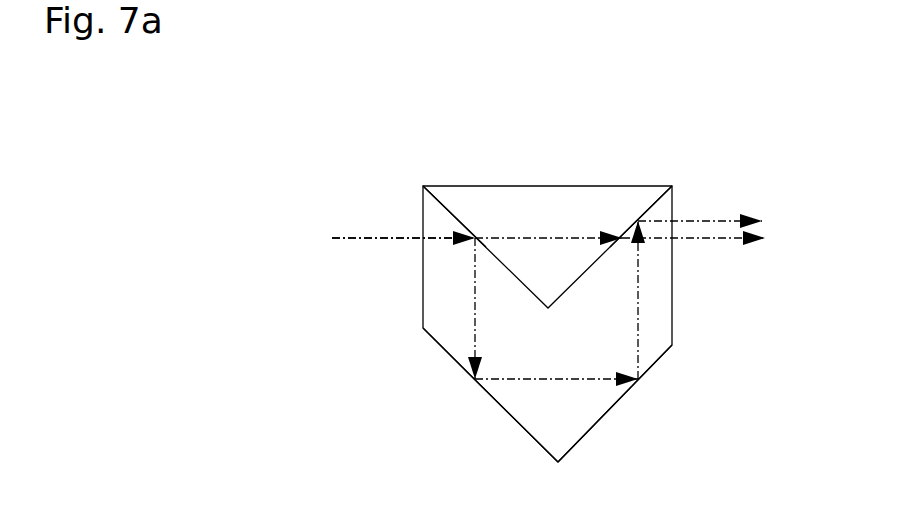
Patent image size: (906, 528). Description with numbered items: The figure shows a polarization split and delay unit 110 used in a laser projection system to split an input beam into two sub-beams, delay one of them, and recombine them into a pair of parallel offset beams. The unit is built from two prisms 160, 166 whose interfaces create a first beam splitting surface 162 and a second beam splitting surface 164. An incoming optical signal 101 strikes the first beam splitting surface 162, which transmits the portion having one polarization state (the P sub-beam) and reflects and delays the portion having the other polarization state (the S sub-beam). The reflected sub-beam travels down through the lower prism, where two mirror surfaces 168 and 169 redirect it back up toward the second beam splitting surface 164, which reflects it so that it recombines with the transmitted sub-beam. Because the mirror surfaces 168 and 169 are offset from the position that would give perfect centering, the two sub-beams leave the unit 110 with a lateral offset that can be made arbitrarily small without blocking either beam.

The polarization split and delay unit 110 is at (710, 165).
The optical signal 101 is at (372, 240).
The prism 160 is at (535, 183).
The first beam splitting surface 162 is at (447, 203).
The second beam splitting surface 164 is at (645, 210).
The prism 166 is at (440, 350).
The mirror surface 168 is at (500, 407).
The mirror surface 169 is at (613, 405).